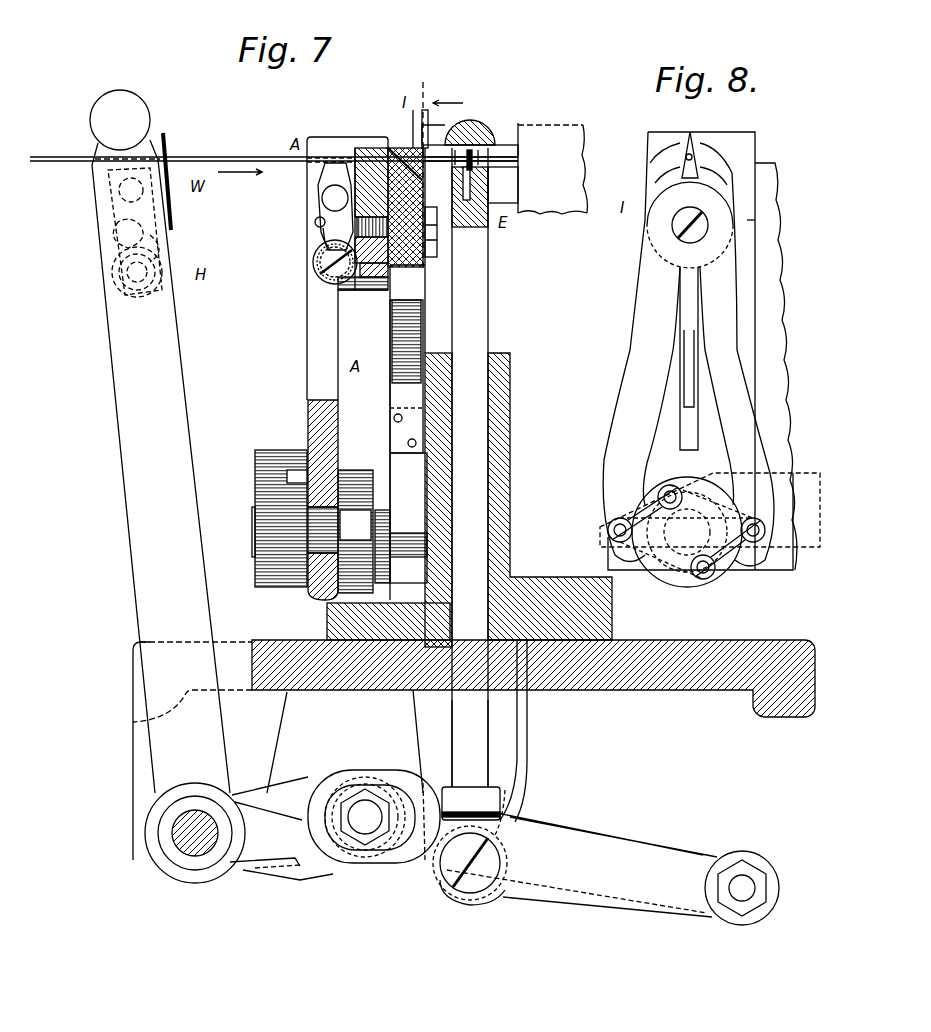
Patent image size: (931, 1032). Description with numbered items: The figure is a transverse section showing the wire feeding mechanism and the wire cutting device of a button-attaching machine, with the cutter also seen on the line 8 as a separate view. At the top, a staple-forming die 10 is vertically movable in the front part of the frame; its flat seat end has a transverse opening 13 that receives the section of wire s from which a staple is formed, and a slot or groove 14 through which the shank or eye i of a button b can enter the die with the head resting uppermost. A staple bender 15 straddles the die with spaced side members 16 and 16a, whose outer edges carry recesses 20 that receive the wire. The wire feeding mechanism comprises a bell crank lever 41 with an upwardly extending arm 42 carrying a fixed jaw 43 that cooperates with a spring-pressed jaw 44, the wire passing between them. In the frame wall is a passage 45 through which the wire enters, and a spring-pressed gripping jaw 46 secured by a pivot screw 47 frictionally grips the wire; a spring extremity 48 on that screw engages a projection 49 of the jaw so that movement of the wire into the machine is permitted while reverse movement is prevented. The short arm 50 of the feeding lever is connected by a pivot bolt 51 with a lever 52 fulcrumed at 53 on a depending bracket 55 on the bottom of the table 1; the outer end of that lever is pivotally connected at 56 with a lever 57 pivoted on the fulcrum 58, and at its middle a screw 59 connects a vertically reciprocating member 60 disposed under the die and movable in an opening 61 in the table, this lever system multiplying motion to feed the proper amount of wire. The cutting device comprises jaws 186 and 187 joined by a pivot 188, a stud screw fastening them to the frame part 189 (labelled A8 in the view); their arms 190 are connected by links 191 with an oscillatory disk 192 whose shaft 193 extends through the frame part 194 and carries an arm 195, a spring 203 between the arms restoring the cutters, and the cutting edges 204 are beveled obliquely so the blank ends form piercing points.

In FIG. 7, the table 1 is at (625, 685).
In FIG. 7, the section line 8 is at (437, 359).
In FIG. 7, the staple-forming die 10 is at (488, 182).
In FIG. 7, the transverse opening 13 is at (518, 146).
In FIG. 7, the slot or groove 14 is at (470, 177).
In FIG. 7, the staple bender 15 is at (432, 142).
In FIG. 7, the side member 16 is at (433, 134).
In FIG. 7, the side member 16a is at (518, 190).
In FIG. 7, the recesses 20 is at (518, 160).
In FIG. 7, the bell crank lever 41 is at (245, 758).
In FIG. 7, the upwardly extending arm 42 is at (170, 378).
In FIG. 7, the fixed jaw 43 is at (93, 150).
In FIG. 7, the spring-pressed jaw 44 is at (118, 180).
In FIG. 7, the passage 45 is at (308, 170).
In FIG. 7, the spring-pressed gripping element or jaw 46 is at (331, 180).
In FIG. 7, the pivot screw 47 is at (316, 258).
In FIG. 7, the spring extremity 48 is at (322, 236).
In FIG. 7, the projection 49 is at (315, 222).
In FIG. 7, the short arm 50 is at (290, 793).
In FIG. 7, the pivot bolt 51 is at (366, 812).
In FIG. 7, the lever 52 is at (548, 827).
In FIG. 7, the fulcrum 53 is at (507, 815).
In FIG. 7, the depending bracket 55 is at (520, 757).
In FIG. 7, the pivotal connection 56 is at (745, 880).
In FIG. 7, the lever 57 is at (538, 893).
In FIG. 7, the fulcrum 58 is at (218, 838).
In FIG. 7, the screw 59 is at (452, 882).
In FIG. 7, the vertically reciprocating member 60 is at (470, 743).
In FIG. 7, the opening 61 is at (413, 690).
In FIG. 7, the cutting jaw 186 is at (362, 152).
In FIG. 8, the cutting jaw 186 is at (732, 173).
In FIG. 7, the cutting jaw 187 is at (434, 190).
In FIG. 8, the cutting jaw 187 is at (658, 183).
In FIG. 7, the pivot 188 is at (432, 258).
In FIG. 8, the pivot 188 is at (677, 227).
In FIG. 7, the frame part 189 is at (372, 255).
In FIG. 8, the frame part 189 is at (747, 223).
In FIG. 7, the arms 190 is at (408, 518).
In FIG. 8, the arms 190 is at (635, 392).
In FIG. 7, the links 191 is at (380, 563).
In FIG. 8, the links 191 is at (686, 532).
In FIG. 7, the oscillatory disk 192 is at (355, 531).
In FIG. 8, the oscillatory disk 192 is at (710, 463).
In FIG. 7, the shaft 193 is at (312, 513).
In FIG. 8, the shaft 193 is at (660, 577).
In FIG. 7, the frame part 194 is at (312, 590).
In FIG. 7, the arm 195 is at (258, 470).
In FIG. 7, the spring 203 is at (400, 397).
In FIG. 8, the spring 203 is at (680, 362).
In FIG. 7, the cutting edges 204 is at (398, 148).
In FIG. 8, the cutting edges 204 is at (692, 135).
In FIG. 7, the button b is at (470, 126).
In FIG. 7, the wire section s is at (435, 160).
In FIG. 7, the shank or eye i is at (488, 135).
In FIG. 8, the plate A A8 is at (773, 192).